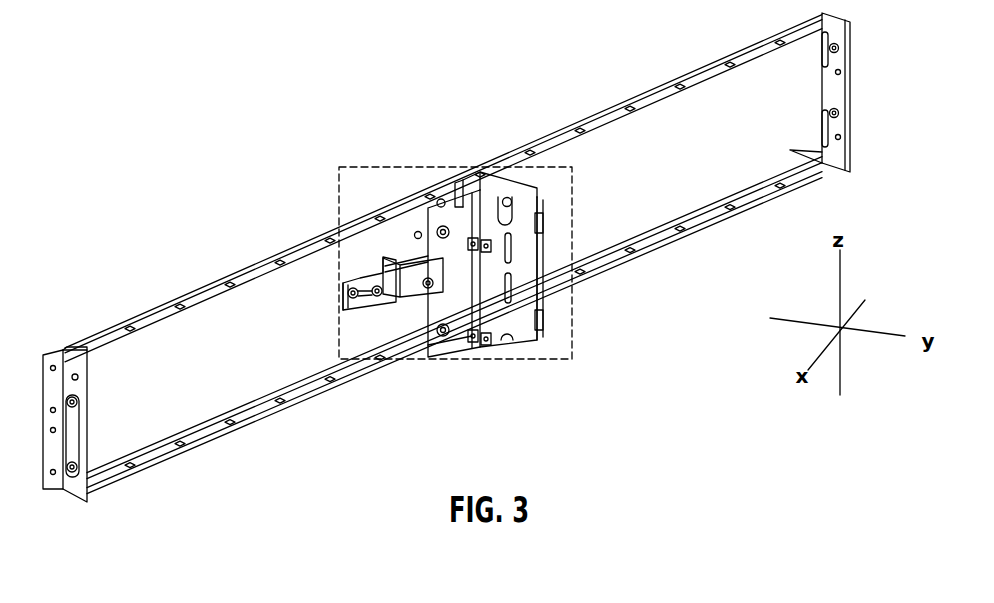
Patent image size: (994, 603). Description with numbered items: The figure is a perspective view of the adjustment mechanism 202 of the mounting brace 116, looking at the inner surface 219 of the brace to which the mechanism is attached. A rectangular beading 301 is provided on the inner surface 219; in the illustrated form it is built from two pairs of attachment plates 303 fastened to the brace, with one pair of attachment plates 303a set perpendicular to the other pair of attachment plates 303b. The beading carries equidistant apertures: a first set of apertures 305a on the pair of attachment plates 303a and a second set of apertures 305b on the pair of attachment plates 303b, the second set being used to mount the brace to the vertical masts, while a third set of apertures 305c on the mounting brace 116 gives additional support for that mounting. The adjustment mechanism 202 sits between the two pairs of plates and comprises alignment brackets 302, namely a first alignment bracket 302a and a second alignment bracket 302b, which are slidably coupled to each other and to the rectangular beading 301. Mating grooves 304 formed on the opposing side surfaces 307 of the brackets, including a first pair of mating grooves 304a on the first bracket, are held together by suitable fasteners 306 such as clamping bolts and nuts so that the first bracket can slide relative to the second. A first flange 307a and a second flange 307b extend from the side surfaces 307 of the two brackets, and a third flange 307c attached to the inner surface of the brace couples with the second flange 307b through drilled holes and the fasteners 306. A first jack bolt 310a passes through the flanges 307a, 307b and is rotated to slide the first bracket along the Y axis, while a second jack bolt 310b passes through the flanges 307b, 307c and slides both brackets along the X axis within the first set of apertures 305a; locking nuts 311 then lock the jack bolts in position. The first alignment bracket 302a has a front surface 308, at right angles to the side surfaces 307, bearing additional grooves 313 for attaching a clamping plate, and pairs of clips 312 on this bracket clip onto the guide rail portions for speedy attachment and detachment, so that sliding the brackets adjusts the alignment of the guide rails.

The mounting brace 116 is at (288, 160).
The adjustment mechanism 202 is at (455, 180).
The inner surface 219 is at (222, 397).
The rectangular beading 301 is at (435, 282).
The alignment brackets 302 is at (556, 244).
The first alignment bracket 302a is at (578, 278).
The second alignment bracket 302b is at (490, 183).
The attachment plates 303 is at (828, 92).
The pair of attachment plates 303a is at (308, 392).
The pair of attachment plates 303b is at (82, 390).
The mating grooves 304 is at (497, 335).
The first pair of mating grooves 304a is at (432, 240).
The first set of apertures 305a is at (280, 398).
The second set of apertures 305b is at (78, 377).
The third set of apertures 305c is at (55, 432).
The suitable fasteners 306 is at (442, 198).
The opposing side surfaces 307 is at (428, 282).
The first flange 307a is at (430, 347).
The second flange 307b is at (385, 268).
The third flange 307c is at (342, 287).
The front surface 308 is at (548, 335).
The first jack bolt 310a is at (367, 217).
The second jack bolt 310b is at (346, 299).
The locking nuts 311 is at (417, 232).
The pairs of clips 312 is at (543, 322).
The additional grooves 313 is at (522, 330).